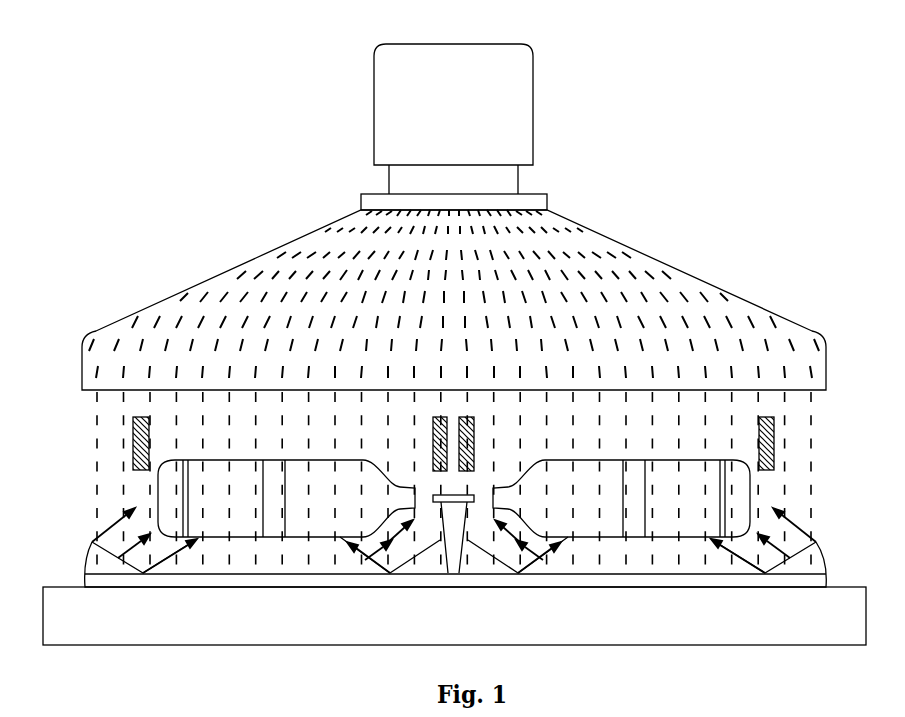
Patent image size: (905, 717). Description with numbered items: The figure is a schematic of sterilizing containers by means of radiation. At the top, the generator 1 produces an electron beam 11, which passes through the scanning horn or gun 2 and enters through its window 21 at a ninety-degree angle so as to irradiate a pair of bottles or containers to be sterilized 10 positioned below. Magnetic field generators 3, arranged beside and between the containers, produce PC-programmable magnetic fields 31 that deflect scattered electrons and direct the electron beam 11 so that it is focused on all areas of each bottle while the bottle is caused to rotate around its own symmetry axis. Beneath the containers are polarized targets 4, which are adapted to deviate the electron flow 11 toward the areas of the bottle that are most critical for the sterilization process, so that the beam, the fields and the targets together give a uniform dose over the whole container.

The generator 1 is at (509, 107).
The scanning horn or gun 2 is at (669, 251).
The electron beam 11 is at (324, 262).
The window 21 is at (127, 380).
The magnetic fields 31 is at (598, 433).
The magnetic field generators 3 is at (123, 434).
The polarized targets 4 is at (74, 542).
The bottles or containers to be sterilized 10 is at (626, 518).